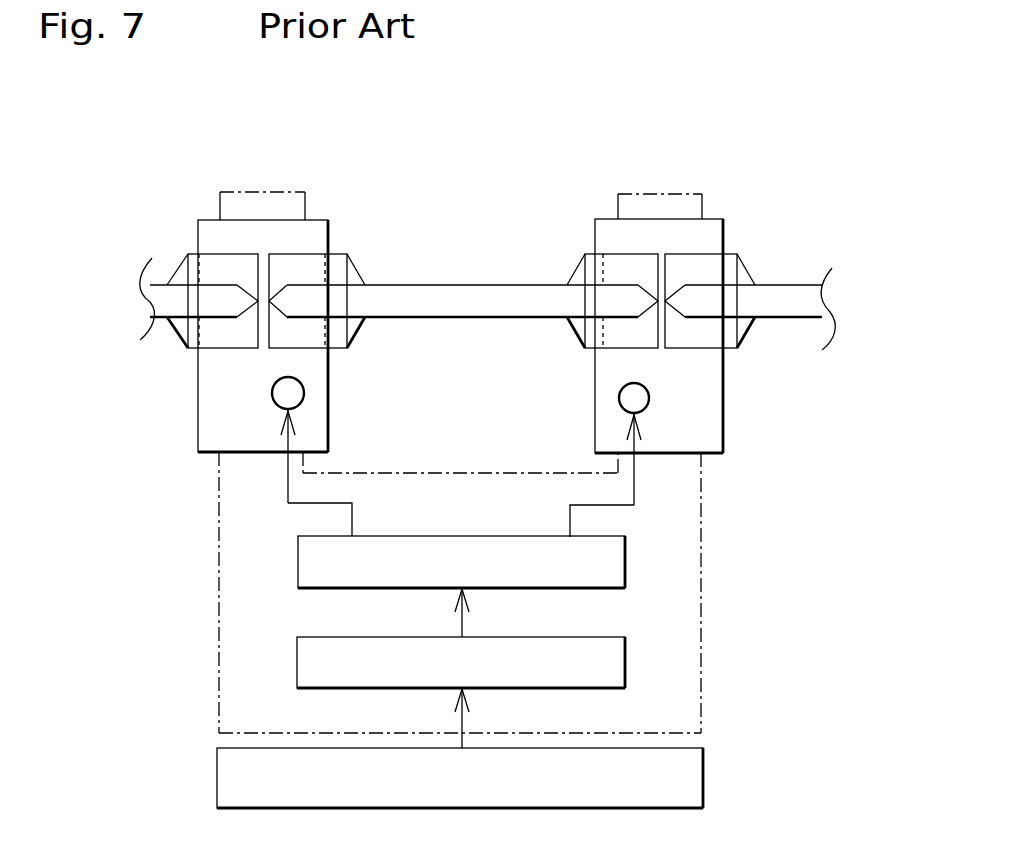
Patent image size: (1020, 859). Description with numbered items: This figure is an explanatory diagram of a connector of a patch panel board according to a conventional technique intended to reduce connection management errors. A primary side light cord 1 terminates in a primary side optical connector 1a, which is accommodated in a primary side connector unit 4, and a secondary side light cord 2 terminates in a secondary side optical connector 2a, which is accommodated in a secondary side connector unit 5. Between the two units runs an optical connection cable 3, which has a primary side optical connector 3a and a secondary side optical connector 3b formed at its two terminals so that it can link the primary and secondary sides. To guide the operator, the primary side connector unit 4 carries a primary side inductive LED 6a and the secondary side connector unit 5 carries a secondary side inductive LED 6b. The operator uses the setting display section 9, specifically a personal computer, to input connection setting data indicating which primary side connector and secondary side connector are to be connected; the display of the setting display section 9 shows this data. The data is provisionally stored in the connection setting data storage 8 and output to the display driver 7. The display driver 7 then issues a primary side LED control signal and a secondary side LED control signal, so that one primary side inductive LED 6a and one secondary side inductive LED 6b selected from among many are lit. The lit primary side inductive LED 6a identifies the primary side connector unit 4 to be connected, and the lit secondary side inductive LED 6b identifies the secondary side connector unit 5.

The primary side light cord 1 is at (160, 297).
The primary side optical connector 1a is at (230, 278).
The secondary side light cord 2 is at (775, 307).
The secondary side optical connector 2a is at (688, 280).
The optical connection cable 3 is at (378, 298).
The primary side optical connector 3a is at (333, 263).
The secondary side optical connector 3b is at (578, 332).
The primary side connector unit 4 is at (210, 242).
The secondary side connector unit 5 is at (607, 240).
The primary side inductive LED 6a is at (291, 397).
The secondary side inductive LED 6b is at (630, 400).
The display driver 7 is at (312, 553).
The connection setting data storage 8 is at (310, 648).
The setting display section 9 is at (243, 755).